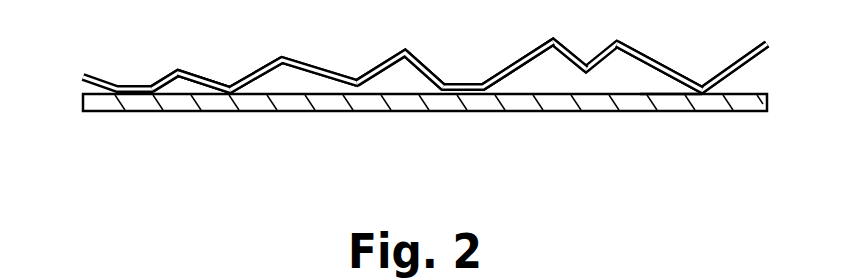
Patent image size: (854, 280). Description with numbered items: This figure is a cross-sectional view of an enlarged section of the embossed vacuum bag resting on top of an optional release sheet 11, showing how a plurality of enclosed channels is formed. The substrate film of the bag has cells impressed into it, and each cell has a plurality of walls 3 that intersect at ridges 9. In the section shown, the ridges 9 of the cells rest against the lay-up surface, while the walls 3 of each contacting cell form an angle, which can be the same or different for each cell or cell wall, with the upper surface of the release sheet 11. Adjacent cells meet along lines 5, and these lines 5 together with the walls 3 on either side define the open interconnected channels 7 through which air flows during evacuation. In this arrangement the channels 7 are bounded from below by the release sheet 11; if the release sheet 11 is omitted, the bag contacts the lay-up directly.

The walls 3 is at (647, 50).
The lines 5 is at (178, 58).
The interconnected channels 7 is at (279, 82).
The ridges 9 is at (227, 80).
The release sheet 11 is at (177, 108).